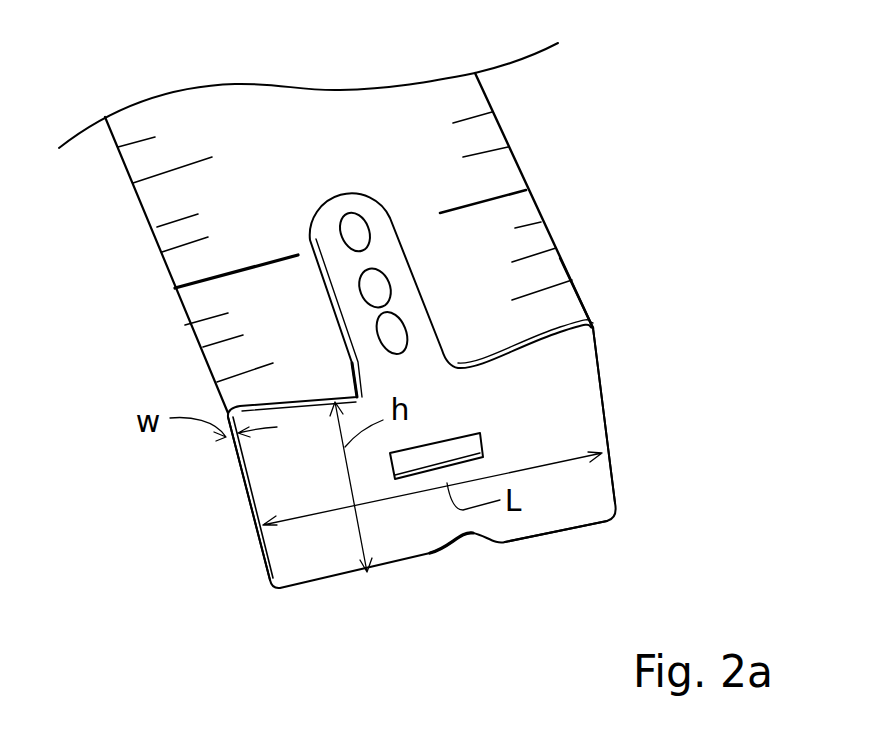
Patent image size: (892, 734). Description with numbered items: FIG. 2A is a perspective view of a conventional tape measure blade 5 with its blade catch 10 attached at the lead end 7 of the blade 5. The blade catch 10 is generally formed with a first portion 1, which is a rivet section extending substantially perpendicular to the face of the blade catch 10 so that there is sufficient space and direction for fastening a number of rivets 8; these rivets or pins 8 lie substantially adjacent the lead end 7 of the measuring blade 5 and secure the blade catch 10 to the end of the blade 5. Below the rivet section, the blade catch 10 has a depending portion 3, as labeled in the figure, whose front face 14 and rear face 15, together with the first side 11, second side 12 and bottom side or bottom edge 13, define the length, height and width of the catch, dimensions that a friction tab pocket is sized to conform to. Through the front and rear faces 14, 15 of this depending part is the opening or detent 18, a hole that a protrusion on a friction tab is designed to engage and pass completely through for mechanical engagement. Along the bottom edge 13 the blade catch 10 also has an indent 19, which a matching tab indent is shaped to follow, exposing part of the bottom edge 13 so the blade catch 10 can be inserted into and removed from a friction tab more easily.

The first portion 1 is at (320, 283).
The plate section 3 is at (543, 415).
The blade 5 is at (322, 132).
The lead end 7 is at (603, 280).
The rivets 8 is at (395, 332).
The blade catch 10 is at (473, 404).
The first side 11 is at (247, 502).
The second side 12 is at (612, 437).
The bottom edge 13 is at (533, 540).
The front face 14 is at (312, 552).
The rear face 15 is at (199, 478).
The detent 18 is at (447, 452).
The indent 19 is at (470, 537).